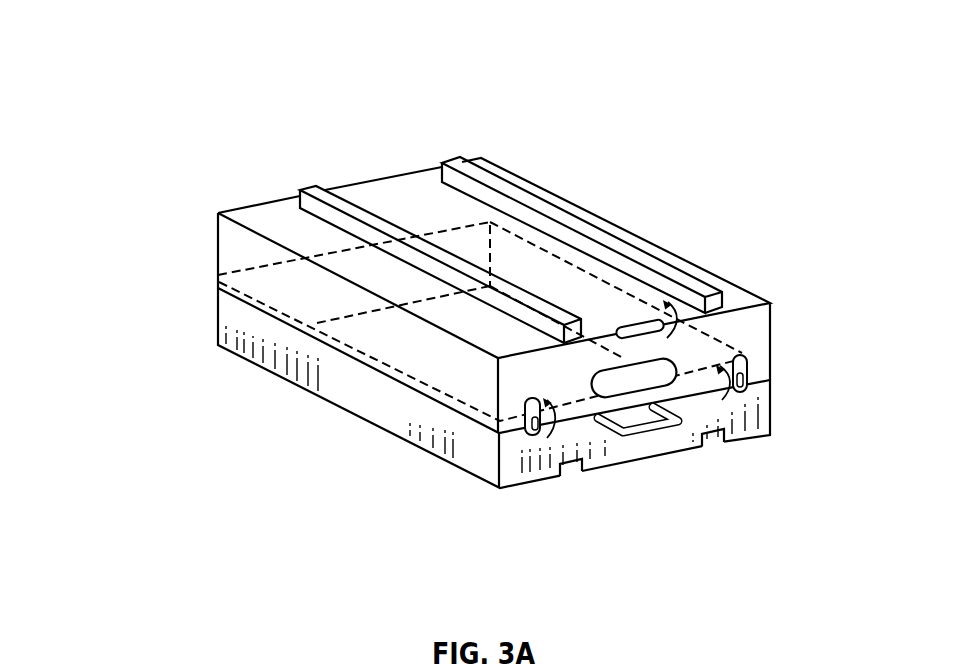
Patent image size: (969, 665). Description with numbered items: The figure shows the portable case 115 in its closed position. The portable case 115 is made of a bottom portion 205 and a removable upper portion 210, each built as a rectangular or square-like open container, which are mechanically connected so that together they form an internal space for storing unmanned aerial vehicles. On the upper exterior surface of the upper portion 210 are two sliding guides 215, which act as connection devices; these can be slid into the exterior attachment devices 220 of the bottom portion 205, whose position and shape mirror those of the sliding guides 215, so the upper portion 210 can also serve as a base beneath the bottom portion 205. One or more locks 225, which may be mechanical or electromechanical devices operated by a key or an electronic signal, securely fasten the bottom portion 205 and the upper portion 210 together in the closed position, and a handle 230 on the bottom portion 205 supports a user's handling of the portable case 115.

The portable case 115 is at (181, 96).
The bottom portion 205 is at (398, 411).
The upper portion 210 is at (272, 300).
The sliding guides 215 is at (330, 203).
The exterior attachment devices 220 is at (573, 470).
The locks 225 is at (550, 434).
The handles 230 is at (650, 438).